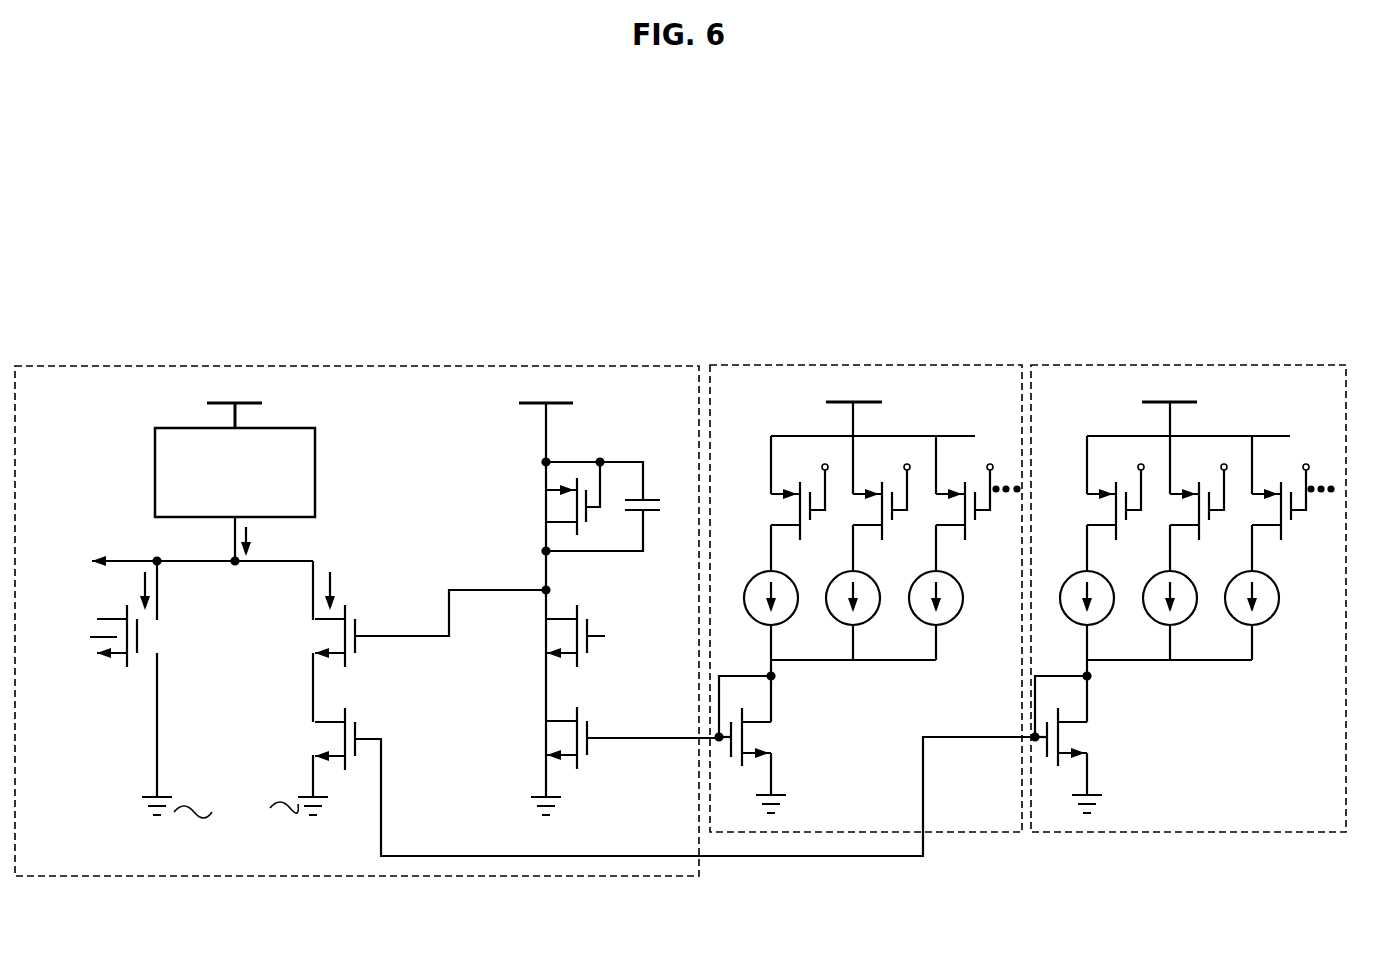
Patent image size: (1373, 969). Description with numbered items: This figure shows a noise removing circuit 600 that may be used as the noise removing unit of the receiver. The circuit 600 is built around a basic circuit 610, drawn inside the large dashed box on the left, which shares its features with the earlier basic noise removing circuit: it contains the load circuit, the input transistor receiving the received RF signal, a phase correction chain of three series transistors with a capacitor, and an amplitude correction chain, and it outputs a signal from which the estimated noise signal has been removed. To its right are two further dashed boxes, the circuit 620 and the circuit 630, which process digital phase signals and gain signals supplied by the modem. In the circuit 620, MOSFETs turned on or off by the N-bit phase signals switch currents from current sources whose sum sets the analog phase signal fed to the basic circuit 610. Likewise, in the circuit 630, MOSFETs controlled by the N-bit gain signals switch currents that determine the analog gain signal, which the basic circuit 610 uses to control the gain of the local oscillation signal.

The noise removing circuit 600 is at (1080, 158).
The basic circuit 610 is at (330, 366).
The phase signal processing circuit 620 is at (808, 365).
The gain signal processing circuit 630 is at (1122, 365).